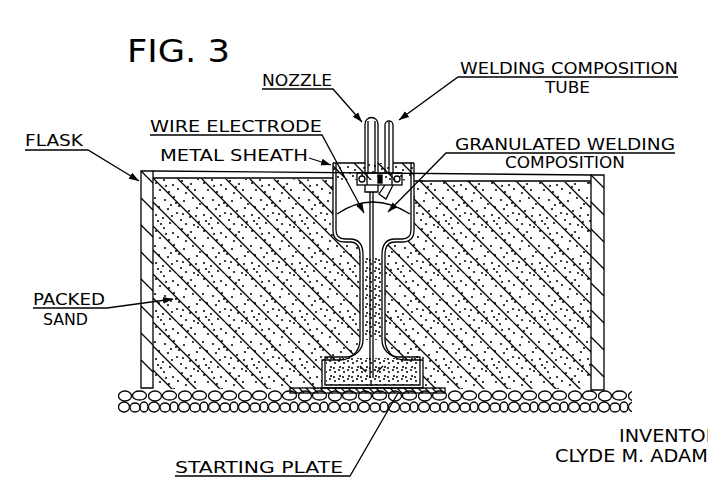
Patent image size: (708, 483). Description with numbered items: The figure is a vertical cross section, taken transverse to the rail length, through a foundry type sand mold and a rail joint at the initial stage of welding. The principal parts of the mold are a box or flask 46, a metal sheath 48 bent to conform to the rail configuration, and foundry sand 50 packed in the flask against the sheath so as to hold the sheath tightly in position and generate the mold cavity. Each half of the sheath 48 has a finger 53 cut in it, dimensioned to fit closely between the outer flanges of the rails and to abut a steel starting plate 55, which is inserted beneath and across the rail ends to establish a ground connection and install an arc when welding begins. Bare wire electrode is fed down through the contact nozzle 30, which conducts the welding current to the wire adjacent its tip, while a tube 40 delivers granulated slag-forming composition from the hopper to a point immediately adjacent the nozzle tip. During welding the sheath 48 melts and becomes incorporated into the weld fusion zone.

The contact nozzle 30 is at (375, 117).
The tube 40 is at (394, 146).
The flask 46 is at (141, 241).
The metal sheath 48 is at (413, 165).
The foundry sand 50 is at (166, 343).
The finger 53 is at (301, 398).
The starting plate 55 is at (361, 392).